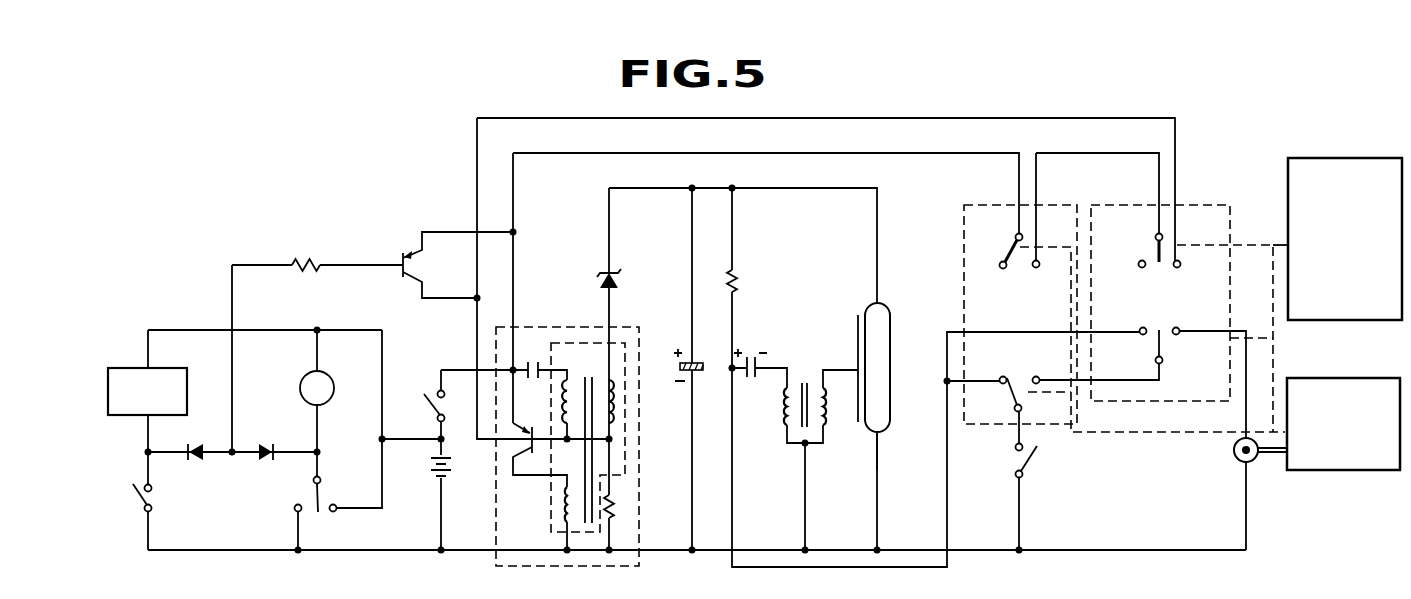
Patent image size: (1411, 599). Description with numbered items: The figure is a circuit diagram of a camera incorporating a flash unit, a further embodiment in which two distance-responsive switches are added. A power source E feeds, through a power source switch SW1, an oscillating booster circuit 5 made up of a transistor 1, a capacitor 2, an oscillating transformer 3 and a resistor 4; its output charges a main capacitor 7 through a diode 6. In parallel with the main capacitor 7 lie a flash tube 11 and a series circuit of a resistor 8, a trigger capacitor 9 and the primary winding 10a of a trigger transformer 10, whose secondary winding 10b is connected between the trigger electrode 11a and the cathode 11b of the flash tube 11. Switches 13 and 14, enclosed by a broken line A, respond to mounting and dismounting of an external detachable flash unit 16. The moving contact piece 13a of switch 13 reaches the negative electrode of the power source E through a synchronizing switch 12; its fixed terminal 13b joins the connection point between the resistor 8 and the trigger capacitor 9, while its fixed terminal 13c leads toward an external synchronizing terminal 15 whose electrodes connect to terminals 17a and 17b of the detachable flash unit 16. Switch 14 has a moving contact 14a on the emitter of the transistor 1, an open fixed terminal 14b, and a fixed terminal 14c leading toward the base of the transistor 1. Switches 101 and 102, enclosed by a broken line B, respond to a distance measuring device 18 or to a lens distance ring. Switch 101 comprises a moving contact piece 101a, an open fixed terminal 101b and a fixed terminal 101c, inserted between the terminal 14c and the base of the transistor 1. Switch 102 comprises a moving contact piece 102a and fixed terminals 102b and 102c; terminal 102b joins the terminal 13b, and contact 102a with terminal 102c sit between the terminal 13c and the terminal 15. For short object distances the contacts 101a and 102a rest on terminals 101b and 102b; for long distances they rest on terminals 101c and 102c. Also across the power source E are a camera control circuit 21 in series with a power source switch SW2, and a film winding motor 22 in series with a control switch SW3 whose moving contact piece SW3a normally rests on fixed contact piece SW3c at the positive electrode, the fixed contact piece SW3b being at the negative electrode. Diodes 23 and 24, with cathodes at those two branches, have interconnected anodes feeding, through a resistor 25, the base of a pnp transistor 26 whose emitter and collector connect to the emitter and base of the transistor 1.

The transistor 1 is at (530, 432).
The capacitor 2 is at (532, 381).
The oscillating transformer 3 is at (590, 378).
The resistor 4 is at (613, 505).
The oscillating booster circuit 5 is at (567, 416).
The diode 6 is at (620, 282).
The main capacitor 7 is at (703, 365).
The resistor 8 is at (737, 288).
The trigger capacitor 9 is at (752, 357).
The trigger transformer 10 is at (799, 388).
The primary winding 10a is at (782, 405).
The secondary winding 10b is at (830, 407).
The flash tube 11 is at (873, 372).
The trigger electrode 11a is at (856, 327).
The cathode 11b is at (878, 470).
The synchronizing switch 12 is at (1020, 460).
The switch 13 is at (1016, 376).
The moving contact piece 13a is at (1013, 375).
The fixed terminal 13b is at (999, 377).
The fixed terminal 13c is at (1038, 378).
The switch 14 is at (1020, 263).
The moving contact 14a is at (1016, 250).
The fixed terminal 14b is at (1000, 263).
The fixed terminal 14c is at (1038, 262).
The external synchronizing terminal 15 is at (1238, 462).
The external detachable flash unit 16 is at (1337, 472).
The terminal 17a is at (1283, 456).
The terminal 17b is at (1285, 440).
The distance measuring device 18 is at (1310, 157).
The camera control circuit 21 is at (135, 368).
The film winding motor 22 is at (300, 382).
The diode 23 is at (197, 445).
The diode 24 is at (265, 445).
The resistor 25 is at (303, 258).
The transistor 26 is at (402, 252).
The switch 101 is at (1158, 260).
The moving contact piece 101a is at (1155, 265).
The fixed terminal 101b is at (1139, 263).
The fixed terminal 101c is at (1180, 263).
The switch 102 is at (1161, 342).
The moving contact piece 102a is at (1176, 326).
The fixed terminal 102b is at (1140, 334).
The fixed terminal 102c is at (1178, 336).
The broken line A is at (1015, 294).
The broken line B is at (1159, 283).
The power source switch SW1 is at (425, 398).
The power source switch SW2 is at (134, 493).
The film winding motor control switch SW3 is at (296, 495).
The moving contact piece SW3a is at (318, 514).
The fixed contact piece SW3b is at (294, 508).
The fixed contact piece SW3c is at (336, 503).
The power source E is at (430, 473).